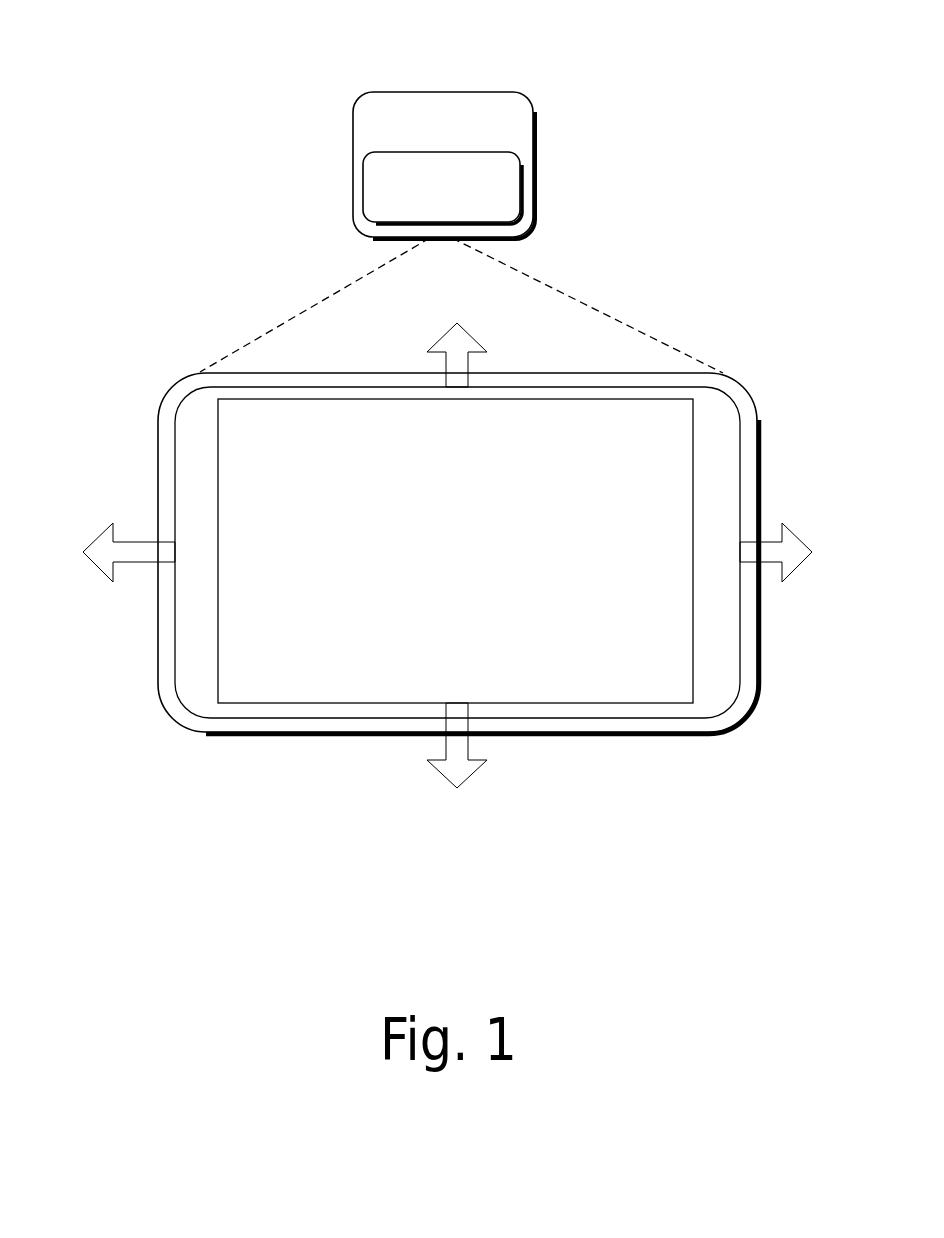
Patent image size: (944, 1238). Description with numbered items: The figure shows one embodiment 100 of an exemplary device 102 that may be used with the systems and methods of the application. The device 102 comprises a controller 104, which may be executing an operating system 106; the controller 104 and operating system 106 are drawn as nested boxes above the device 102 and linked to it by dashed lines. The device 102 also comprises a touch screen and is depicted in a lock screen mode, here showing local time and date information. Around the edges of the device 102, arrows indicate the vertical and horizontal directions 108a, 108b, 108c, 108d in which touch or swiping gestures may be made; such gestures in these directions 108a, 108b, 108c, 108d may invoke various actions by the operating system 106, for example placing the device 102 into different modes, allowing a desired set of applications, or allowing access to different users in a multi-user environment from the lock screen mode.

The embodiment 100 is at (245, 58).
The device 102 is at (740, 388).
The controller 104 is at (444, 165).
The operating system 106 is at (442, 188).
The swiping gesture direction 108a is at (457, 340).
The swiping gesture direction 108b is at (803, 552).
The swiping gesture direction 108c is at (457, 760).
The swiping gesture direction 108d is at (102, 552).